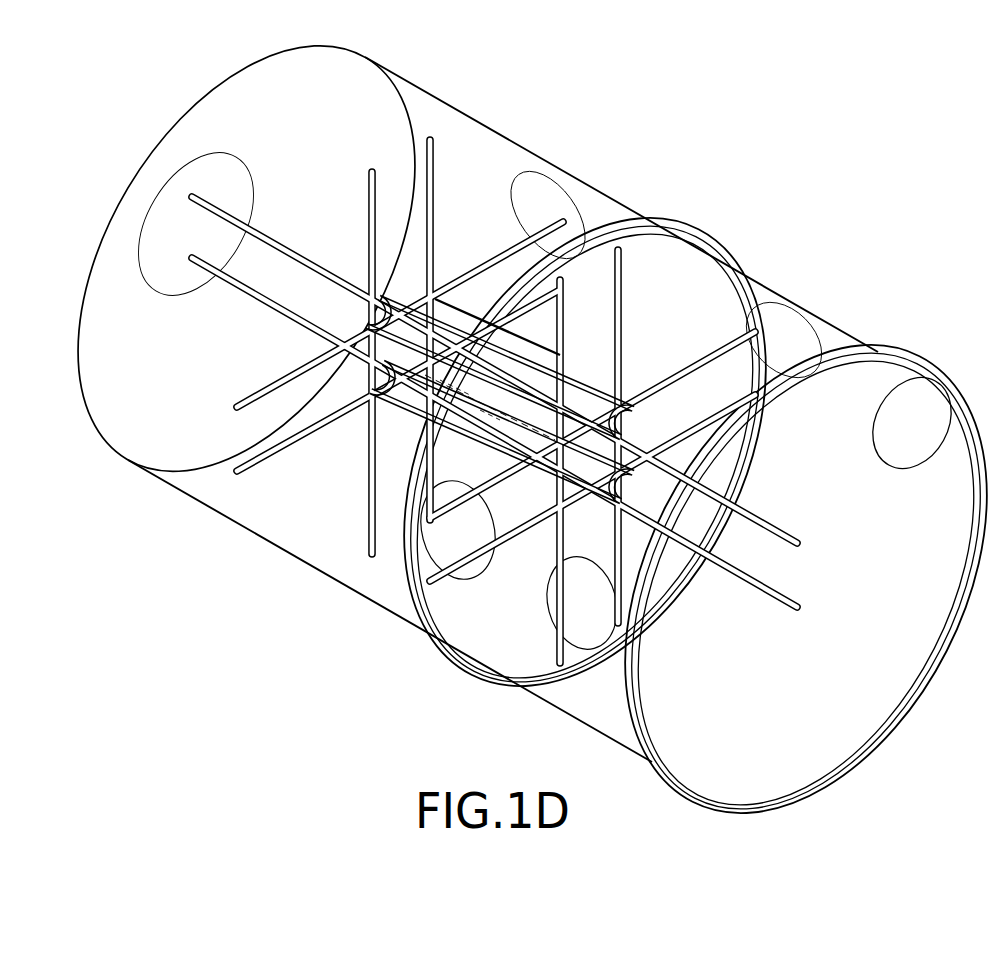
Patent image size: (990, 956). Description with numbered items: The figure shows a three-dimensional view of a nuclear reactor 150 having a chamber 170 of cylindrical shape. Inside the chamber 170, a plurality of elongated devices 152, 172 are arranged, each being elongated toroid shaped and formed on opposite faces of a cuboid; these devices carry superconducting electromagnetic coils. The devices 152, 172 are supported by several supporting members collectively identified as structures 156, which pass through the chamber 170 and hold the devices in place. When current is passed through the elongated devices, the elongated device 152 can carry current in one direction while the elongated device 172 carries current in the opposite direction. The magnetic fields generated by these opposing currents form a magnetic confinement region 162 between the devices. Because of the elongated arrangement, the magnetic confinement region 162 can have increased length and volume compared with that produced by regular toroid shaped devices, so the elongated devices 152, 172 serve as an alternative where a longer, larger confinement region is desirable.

The nuclear reactor 150 is at (788, 178).
The elongated device 152 is at (460, 313).
The structures 156 is at (252, 294).
The magnetic confinement region 162 is at (493, 420).
The chamber 170 is at (285, 557).
The elongated device 172 is at (597, 463).